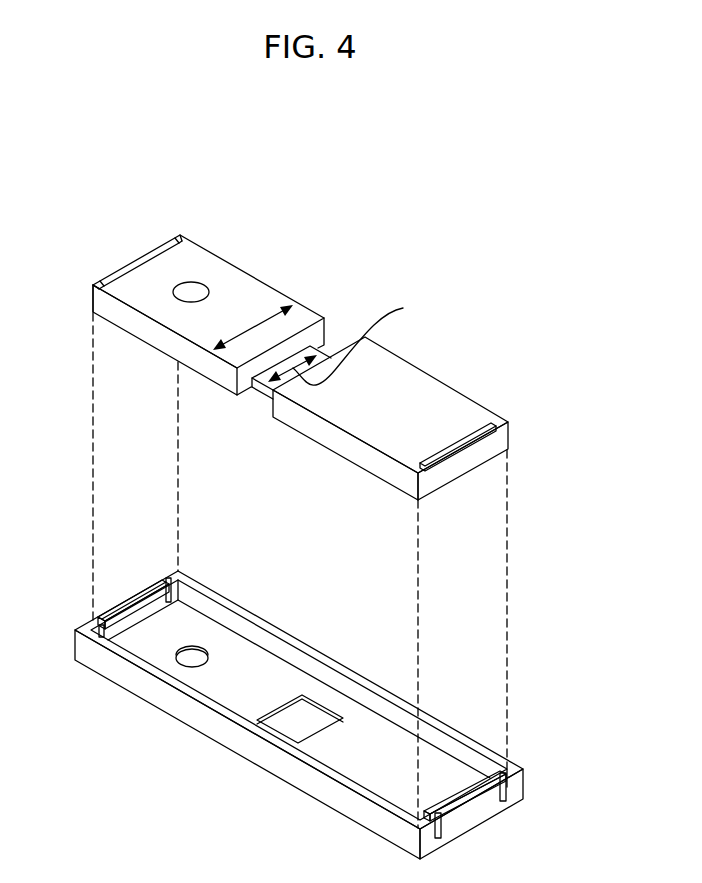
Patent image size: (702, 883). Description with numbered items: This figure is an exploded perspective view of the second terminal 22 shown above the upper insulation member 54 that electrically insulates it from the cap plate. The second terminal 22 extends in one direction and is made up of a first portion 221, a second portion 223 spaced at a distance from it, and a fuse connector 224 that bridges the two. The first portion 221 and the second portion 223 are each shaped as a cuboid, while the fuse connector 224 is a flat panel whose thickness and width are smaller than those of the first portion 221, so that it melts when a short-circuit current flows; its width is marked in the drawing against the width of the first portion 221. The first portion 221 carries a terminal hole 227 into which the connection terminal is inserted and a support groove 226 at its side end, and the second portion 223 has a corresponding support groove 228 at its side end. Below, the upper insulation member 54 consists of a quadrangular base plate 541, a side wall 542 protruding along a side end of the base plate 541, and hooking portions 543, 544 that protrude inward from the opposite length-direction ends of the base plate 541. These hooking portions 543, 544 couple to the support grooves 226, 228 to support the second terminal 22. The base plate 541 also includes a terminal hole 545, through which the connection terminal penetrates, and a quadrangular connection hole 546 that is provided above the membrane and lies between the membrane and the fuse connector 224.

The second terminal 22 is at (278, 264).
The first portion 221 is at (215, 268).
The second portion 223 is at (430, 398).
The fuse connector 224 is at (300, 356).
The support groove 226 is at (113, 283).
The terminal hole 227 is at (188, 290).
The support groove 228 is at (468, 451).
The upper insulation member 54 is at (250, 588).
The base plate 541 is at (352, 732).
The side wall 542 is at (296, 660).
The hooking portion 543 is at (468, 799).
The hooking portion 544 is at (138, 590).
The terminal hole 545 is at (180, 667).
The connection hole 546 is at (275, 727).